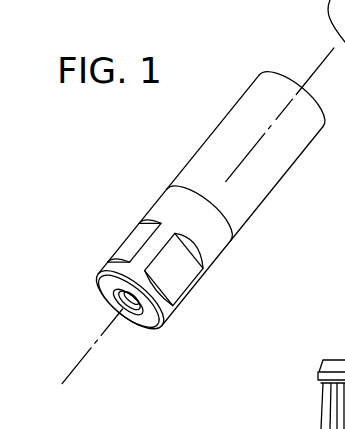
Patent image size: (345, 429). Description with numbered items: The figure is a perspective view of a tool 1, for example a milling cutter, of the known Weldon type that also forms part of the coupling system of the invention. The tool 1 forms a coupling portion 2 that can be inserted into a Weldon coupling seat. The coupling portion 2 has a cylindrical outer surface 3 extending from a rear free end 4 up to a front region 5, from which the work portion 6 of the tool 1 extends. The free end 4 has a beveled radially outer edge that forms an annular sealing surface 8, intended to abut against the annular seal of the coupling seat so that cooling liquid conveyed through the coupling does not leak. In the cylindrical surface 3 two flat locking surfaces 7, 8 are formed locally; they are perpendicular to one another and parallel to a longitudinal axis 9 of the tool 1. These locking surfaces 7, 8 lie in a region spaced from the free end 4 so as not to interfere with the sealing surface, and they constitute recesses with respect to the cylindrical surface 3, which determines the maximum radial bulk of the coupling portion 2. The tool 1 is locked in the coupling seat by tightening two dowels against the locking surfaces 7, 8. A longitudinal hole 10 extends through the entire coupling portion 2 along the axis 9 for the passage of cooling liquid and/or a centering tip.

The tool 1 is at (133, 158).
The coupling portion 2 is at (165, 311).
The cylindrical outer surface 3 is at (213, 236).
The rear free end 4 is at (148, 325).
The front region 5 is at (181, 189).
The work portion 6 is at (267, 186).
The flat locking surface 7 is at (139, 230).
The flat locking surface 8 is at (172, 272).
The longitudinal axis 9 is at (314, 68).
The longitudinal hole 10 is at (128, 307).